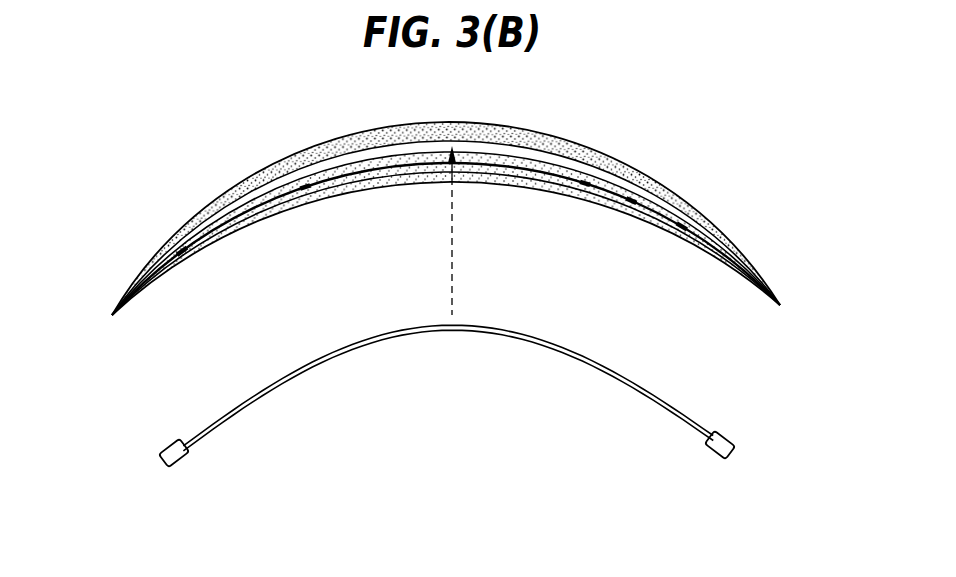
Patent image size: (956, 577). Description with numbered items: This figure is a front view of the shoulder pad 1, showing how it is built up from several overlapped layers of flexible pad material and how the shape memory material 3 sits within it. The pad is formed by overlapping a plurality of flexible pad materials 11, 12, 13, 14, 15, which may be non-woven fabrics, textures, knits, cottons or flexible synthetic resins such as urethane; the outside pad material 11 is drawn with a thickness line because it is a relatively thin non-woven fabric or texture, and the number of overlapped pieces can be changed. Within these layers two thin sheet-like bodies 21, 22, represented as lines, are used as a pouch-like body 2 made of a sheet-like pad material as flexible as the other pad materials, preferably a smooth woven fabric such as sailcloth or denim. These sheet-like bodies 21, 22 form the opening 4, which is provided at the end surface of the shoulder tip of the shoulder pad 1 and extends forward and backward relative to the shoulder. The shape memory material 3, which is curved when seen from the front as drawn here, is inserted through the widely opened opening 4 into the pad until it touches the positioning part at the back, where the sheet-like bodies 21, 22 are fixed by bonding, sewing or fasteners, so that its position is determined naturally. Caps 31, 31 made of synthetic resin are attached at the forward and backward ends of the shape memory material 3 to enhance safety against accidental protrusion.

The shoulder pad 1 is at (636, 169).
The outside pad material 11 is at (340, 140).
The pad material 12 is at (302, 158).
The pouch-like body 2 is at (437, 231).
The sheet-like body 21 is at (263, 187).
The sheet-like body 22 is at (257, 197).
The pad material 13 is at (307, 198).
The pad material 14 is at (360, 197).
The pad material 15 is at (413, 180).
The shape memory material 3 is at (417, 333).
The cap 31 is at (168, 443).
The opening 4 is at (510, 150).